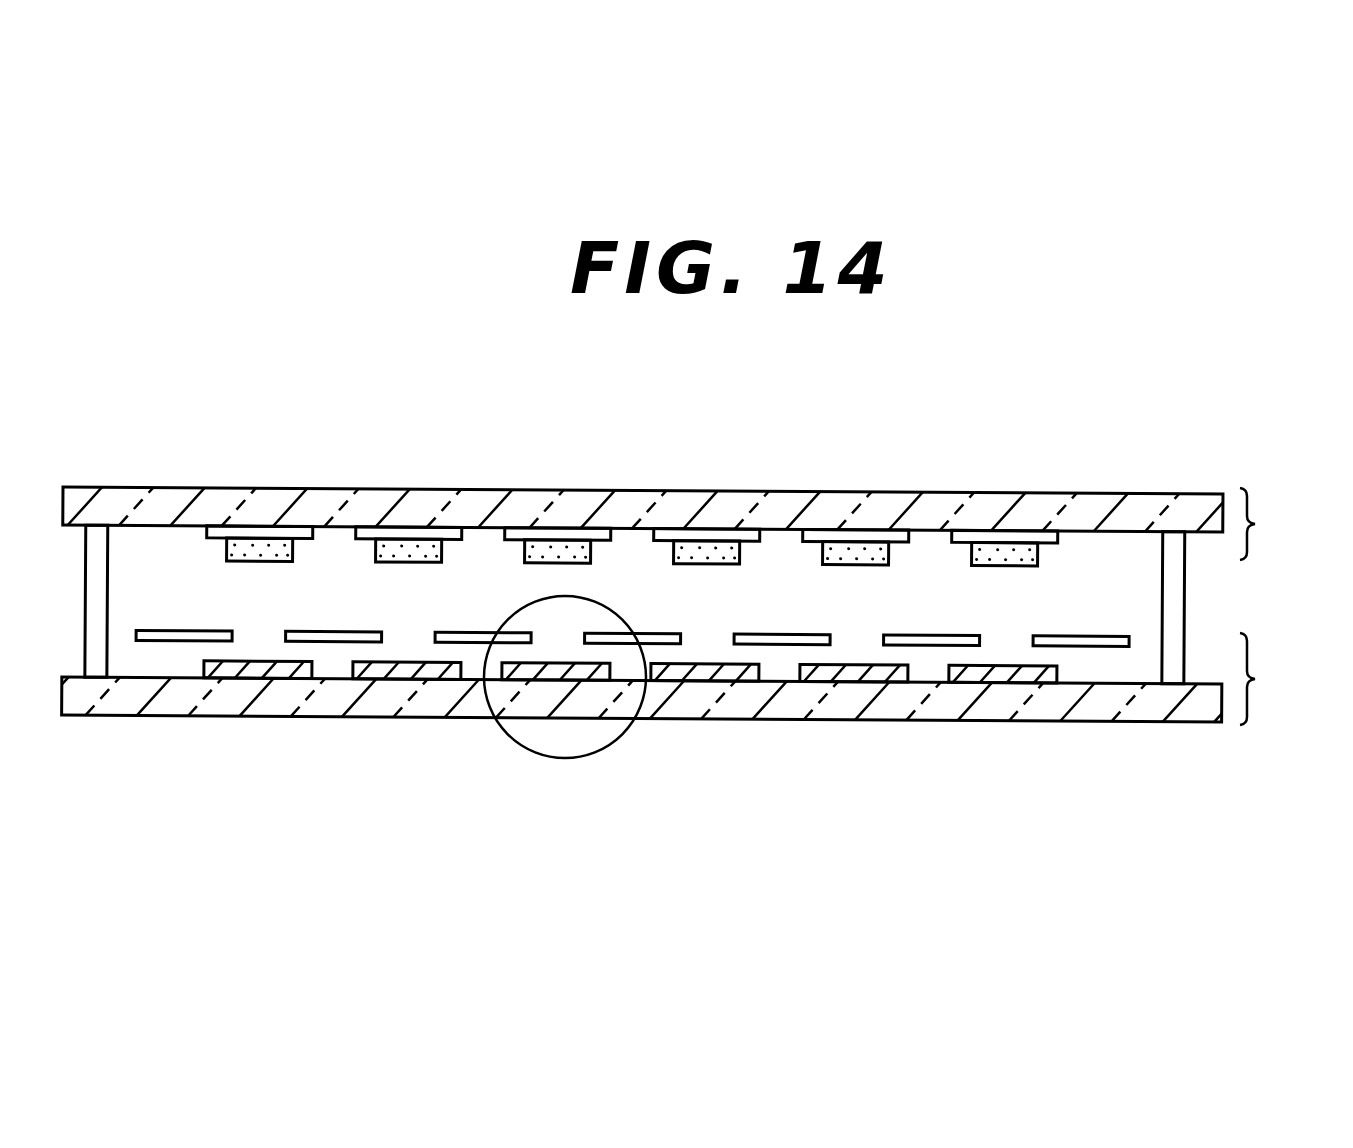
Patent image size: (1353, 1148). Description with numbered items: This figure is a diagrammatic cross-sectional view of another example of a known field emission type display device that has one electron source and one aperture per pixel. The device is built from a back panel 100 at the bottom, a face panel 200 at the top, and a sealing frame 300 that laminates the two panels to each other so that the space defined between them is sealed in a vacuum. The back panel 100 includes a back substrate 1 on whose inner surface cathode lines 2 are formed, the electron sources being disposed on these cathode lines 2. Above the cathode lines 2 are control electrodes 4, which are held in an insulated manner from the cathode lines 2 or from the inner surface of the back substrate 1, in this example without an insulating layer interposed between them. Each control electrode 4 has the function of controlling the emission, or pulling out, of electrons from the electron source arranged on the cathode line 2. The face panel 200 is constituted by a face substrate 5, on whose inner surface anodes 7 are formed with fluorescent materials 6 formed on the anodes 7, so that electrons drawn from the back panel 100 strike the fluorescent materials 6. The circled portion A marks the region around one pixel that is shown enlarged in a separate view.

The back substrate 1 is at (213, 705).
The cathode line 2 is at (378, 688).
The control electrode 4 is at (928, 645).
The face substrate 5 is at (214, 500).
The fluorescent material 6 is at (858, 555).
The anode 7 is at (978, 540).
The back panel 100 is at (1280, 679).
The face panel 200 is at (1277, 524).
The sealing frame 300 is at (1175, 540).
The portion A is at (617, 742).